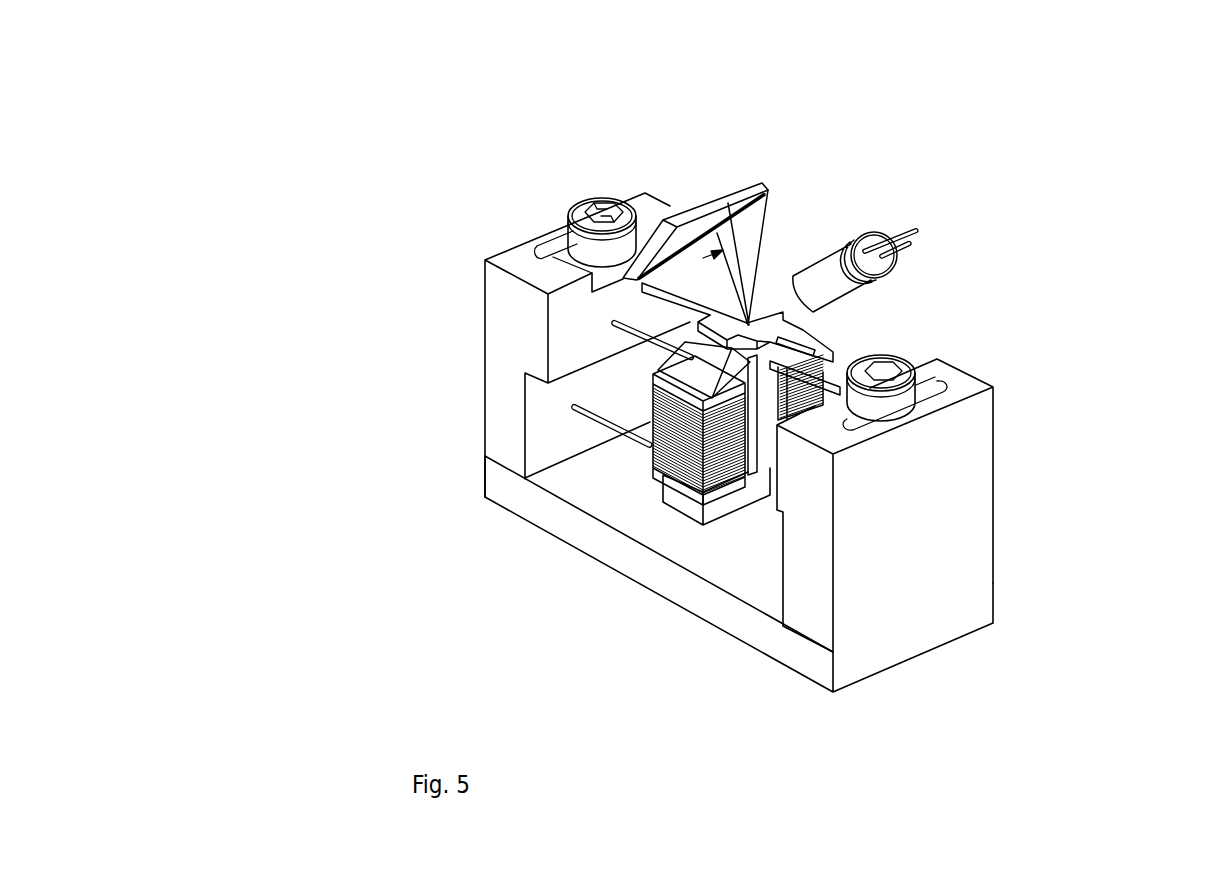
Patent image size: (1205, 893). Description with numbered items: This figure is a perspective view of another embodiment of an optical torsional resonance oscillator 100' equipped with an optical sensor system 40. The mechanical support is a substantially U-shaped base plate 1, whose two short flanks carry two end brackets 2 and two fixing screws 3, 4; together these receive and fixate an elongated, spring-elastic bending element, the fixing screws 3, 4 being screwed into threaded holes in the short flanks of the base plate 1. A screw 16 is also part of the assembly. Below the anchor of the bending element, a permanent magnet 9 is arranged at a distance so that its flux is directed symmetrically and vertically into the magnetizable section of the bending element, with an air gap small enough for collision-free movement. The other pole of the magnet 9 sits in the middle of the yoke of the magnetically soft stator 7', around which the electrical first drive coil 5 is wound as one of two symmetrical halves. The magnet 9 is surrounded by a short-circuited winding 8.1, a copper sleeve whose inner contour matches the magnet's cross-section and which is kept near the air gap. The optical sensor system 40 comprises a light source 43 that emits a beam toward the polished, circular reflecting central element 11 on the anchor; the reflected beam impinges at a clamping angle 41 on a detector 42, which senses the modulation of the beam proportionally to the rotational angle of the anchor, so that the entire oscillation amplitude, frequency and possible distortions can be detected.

The base plate 1 is at (617, 505).
The end bracket 2 is at (510, 303).
The fixing screw 3 is at (602, 207).
The fixing screw 4 is at (880, 368).
The first drive coil 5 is at (652, 444).
The stator 7' is at (642, 568).
The short-circuited winding 8.1 is at (748, 363).
The magnet 9 is at (763, 458).
The central element 11 is at (749, 323).
The screw 16 is at (652, 382).
The optical sensor system 40 is at (810, 170).
The clamping angle of the sensor system 41 is at (750, 307).
The detector 42 is at (728, 205).
The light source 43 is at (880, 207).
The torsional resonance oscillator 100' is at (793, 401).